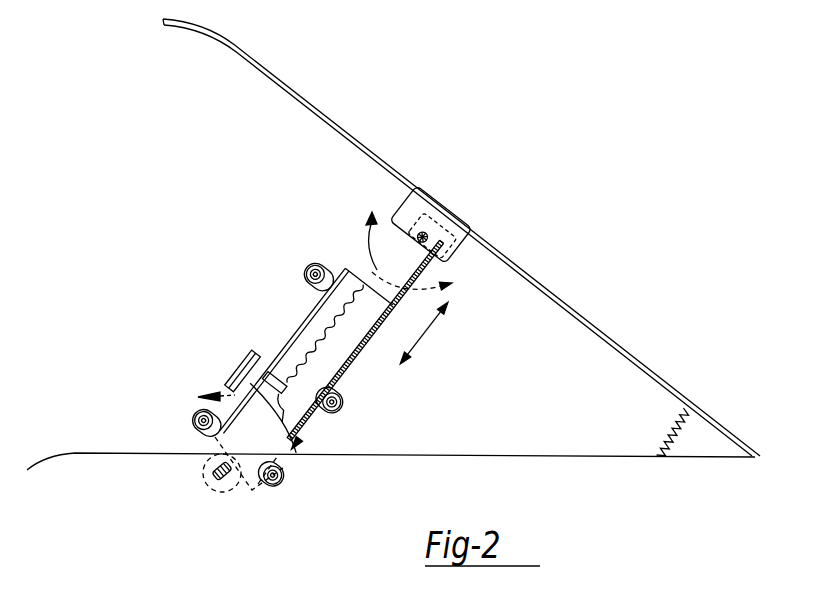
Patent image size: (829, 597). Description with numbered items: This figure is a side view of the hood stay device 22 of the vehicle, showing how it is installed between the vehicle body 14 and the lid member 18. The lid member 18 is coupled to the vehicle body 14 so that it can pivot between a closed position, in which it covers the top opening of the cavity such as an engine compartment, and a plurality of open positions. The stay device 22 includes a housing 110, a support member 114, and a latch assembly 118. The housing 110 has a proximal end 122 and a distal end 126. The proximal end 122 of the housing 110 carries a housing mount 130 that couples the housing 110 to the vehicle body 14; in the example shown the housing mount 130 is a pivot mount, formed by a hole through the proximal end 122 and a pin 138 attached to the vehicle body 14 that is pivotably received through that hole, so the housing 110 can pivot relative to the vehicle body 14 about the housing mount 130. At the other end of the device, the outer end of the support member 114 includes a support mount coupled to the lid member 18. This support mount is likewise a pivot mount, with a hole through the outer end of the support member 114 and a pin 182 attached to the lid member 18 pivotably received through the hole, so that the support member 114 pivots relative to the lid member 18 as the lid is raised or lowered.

The vehicle body 14 is at (83, 452).
The lid member 18 is at (283, 80).
The stay device 22 is at (208, 275).
The housing 110 is at (309, 311).
The support member 114 is at (407, 261).
The latch assembly 118 is at (234, 362).
The proximal end 122 is at (205, 465).
The distal end 126 is at (349, 266).
The housing mount 130 is at (242, 488).
The pin 138 is at (203, 490).
The pin 182 is at (450, 206).